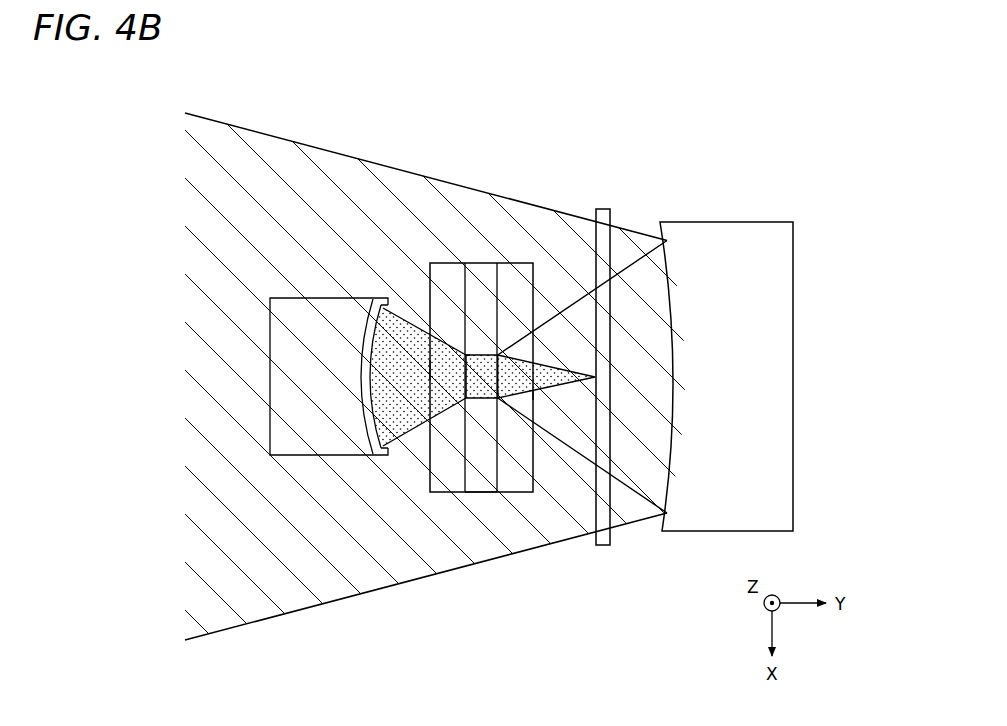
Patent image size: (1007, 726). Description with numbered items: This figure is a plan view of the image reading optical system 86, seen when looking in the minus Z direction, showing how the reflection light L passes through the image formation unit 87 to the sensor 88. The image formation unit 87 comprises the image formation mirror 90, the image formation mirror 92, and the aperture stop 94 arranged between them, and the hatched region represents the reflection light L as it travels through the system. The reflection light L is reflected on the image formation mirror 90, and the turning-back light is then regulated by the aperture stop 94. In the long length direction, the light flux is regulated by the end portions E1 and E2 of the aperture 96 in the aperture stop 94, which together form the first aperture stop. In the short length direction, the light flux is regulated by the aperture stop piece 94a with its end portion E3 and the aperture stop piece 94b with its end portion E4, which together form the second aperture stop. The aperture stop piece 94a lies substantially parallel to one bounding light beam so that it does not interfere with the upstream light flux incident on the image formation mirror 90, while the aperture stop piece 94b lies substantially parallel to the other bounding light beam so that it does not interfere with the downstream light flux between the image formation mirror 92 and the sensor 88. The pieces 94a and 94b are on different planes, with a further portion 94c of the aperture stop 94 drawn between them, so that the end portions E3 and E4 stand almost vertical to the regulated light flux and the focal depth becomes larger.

The image reading optical system 86 is at (531, 367).
The image formation unit 87 is at (468, 384).
The sensor 88 is at (598, 546).
The image formation mirror 90 is at (730, 221).
The image formation mirror 92 is at (330, 457).
The aperture stop 94 is at (489, 381).
The aperture stop piece 94a is at (445, 273).
The aperture stop piece 94b is at (517, 280).
The third portion of optical block 94c is at (477, 483).
The aperture 96 is at (466, 398).
The end portion E1 is at (498, 400).
The end portion E2 is at (472, 352).
The end portion E3 is at (435, 368).
The end portion E4 is at (534, 398).
The reflection light L is at (422, 376).